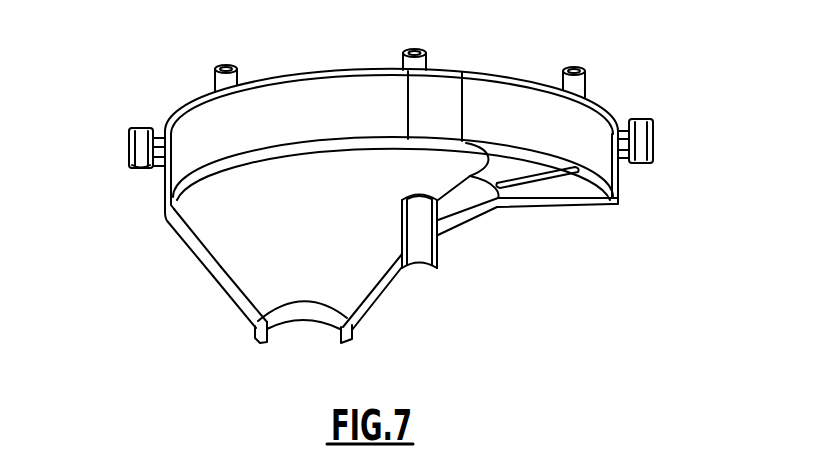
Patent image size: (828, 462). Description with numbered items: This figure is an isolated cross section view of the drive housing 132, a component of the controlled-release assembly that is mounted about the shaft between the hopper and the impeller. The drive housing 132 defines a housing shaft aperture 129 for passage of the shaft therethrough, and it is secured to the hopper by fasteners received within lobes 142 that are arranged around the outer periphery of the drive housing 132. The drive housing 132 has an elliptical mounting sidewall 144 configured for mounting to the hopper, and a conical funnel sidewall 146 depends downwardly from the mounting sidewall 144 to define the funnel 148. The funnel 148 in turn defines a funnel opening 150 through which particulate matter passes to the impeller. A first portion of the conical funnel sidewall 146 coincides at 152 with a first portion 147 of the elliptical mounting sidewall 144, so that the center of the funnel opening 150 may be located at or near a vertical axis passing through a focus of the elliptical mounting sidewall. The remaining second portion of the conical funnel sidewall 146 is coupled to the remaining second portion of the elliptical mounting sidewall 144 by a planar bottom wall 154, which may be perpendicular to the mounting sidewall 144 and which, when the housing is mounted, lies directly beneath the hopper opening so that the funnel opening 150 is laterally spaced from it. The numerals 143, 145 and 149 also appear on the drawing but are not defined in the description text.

The housing shaft aperture 129 is at (417, 210).
The drive housing 132 is at (361, 70).
The lobes 142 is at (131, 146).
The cylindrical side wall 143 is at (207, 121).
The elliptical mounting sidewall 144 is at (468, 72).
The side wall right portion 145 is at (593, 128).
The conical funnel sidewall 146 is at (238, 296).
The first portion of elliptical mounting sidewall 147 is at (198, 224).
The funnel 148 is at (368, 273).
The curved gusset 149 is at (473, 155).
The funnel opening 150 is at (267, 341).
The coincidence location 152 is at (171, 217).
The planar bottom wall 154 is at (552, 188).